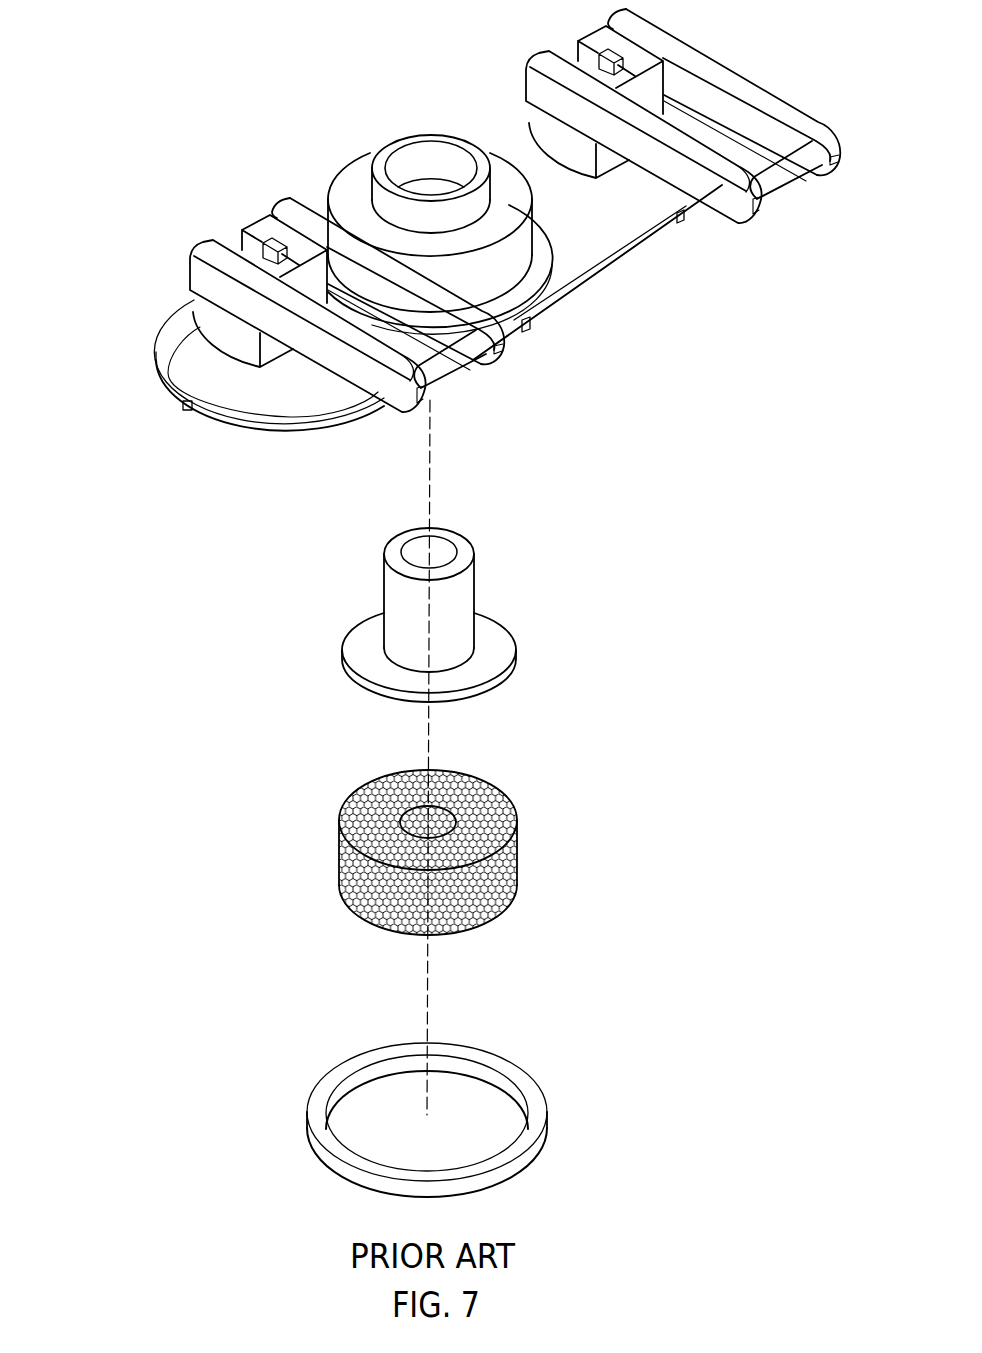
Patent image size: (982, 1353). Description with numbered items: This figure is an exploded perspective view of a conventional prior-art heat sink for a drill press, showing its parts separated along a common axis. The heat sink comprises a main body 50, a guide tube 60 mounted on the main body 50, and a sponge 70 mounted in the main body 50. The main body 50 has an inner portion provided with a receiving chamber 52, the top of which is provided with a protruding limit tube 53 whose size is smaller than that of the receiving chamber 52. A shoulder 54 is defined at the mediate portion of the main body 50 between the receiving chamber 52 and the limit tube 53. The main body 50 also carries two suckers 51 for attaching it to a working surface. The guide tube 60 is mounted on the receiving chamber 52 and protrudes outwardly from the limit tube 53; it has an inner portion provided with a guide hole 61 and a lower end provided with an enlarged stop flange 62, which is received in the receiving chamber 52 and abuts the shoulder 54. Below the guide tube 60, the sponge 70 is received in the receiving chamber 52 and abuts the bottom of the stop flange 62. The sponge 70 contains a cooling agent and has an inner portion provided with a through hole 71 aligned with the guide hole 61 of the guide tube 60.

The main body 50 is at (590, 321).
The suckers 51 is at (243, 343).
The receiving chamber 52 is at (432, 192).
The limit tube 53 is at (380, 193).
The shoulder 54 is at (520, 200).
The guide tube 60 is at (401, 633).
The guide hole 61 is at (445, 551).
The stop flange 62 is at (482, 662).
The sponge 70 is at (389, 855).
The through hole 71 is at (443, 820).